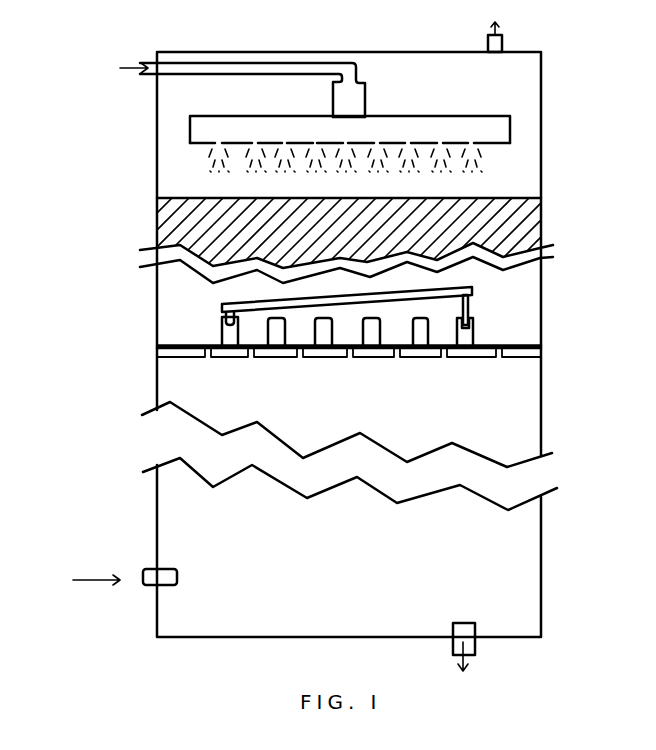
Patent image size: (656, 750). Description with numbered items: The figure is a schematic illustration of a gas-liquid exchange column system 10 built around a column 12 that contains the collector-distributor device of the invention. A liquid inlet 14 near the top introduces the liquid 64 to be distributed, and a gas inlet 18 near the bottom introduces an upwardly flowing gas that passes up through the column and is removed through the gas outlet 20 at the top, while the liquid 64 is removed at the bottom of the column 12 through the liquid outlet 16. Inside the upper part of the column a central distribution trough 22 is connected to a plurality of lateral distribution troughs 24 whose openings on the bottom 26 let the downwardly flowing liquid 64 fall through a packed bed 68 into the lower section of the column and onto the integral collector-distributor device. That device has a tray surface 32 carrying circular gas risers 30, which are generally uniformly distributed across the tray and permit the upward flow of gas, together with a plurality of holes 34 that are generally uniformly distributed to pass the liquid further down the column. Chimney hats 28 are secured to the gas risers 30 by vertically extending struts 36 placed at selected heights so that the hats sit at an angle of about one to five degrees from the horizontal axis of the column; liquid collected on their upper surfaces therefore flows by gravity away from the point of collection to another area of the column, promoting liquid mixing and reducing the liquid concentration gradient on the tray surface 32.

The gas-liquid exchange column system 10 is at (76, 47).
The column 12 is at (541, 421).
The liquid inlet 14 is at (151, 60).
The liquid outlet 16 is at (475, 647).
The gas inlet 18 is at (147, 587).
The gas outlet 20 is at (509, 37).
The central distribution trough 22 is at (356, 92).
The lateral distribution troughs 24 is at (495, 127).
The openings on the bottom 26 is at (473, 145).
The chimney hats 28 is at (468, 288).
The gas risers 30 is at (468, 335).
The tray surface 32 is at (530, 352).
The holes 34 is at (457, 357).
The vertically extending struts 36 is at (465, 303).
The liquid 64 is at (252, 172).
The packed bed 68 is at (521, 226).